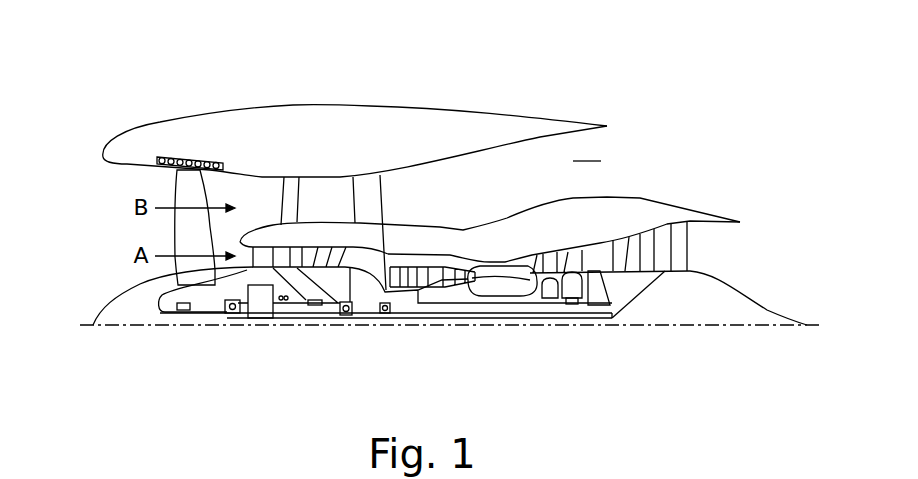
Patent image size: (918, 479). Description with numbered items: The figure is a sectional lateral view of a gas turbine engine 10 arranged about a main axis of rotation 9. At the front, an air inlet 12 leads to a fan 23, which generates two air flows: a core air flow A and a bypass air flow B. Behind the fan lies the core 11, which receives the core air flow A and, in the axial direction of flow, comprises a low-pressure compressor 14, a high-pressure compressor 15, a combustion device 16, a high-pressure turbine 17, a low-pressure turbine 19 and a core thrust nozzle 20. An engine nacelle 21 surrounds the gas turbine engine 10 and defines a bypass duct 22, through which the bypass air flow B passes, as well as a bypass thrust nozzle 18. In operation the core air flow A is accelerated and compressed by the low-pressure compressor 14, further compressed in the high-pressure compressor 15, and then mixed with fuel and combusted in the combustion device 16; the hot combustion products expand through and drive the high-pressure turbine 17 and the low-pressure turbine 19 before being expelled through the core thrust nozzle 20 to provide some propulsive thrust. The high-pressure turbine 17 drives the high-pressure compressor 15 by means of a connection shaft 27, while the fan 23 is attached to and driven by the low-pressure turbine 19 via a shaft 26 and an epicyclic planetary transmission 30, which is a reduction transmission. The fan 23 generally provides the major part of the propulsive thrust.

The main axis of rotation 9 is at (710, 330).
The gas turbine engine 10 is at (152, 121).
The core 11 is at (513, 238).
The air inlet 12 is at (112, 183).
The low-pressure compressor 14 is at (313, 250).
The high-pressure compressor 15 is at (440, 268).
The combustion device 16 is at (497, 275).
The high-pressure turbine 17 is at (557, 253).
The bypass thrust nozzle 18 is at (697, 121).
The low-pressure turbine 19 is at (665, 257).
The core thrust nozzle 20 is at (742, 256).
The engine nacelle 21 is at (365, 118).
The bypass duct 22 is at (587, 149).
The fan 23 is at (175, 243).
The shaft 26 is at (407, 318).
The connection shaft 27 is at (463, 310).
The epicyclic planetary transmission 30 is at (262, 308).